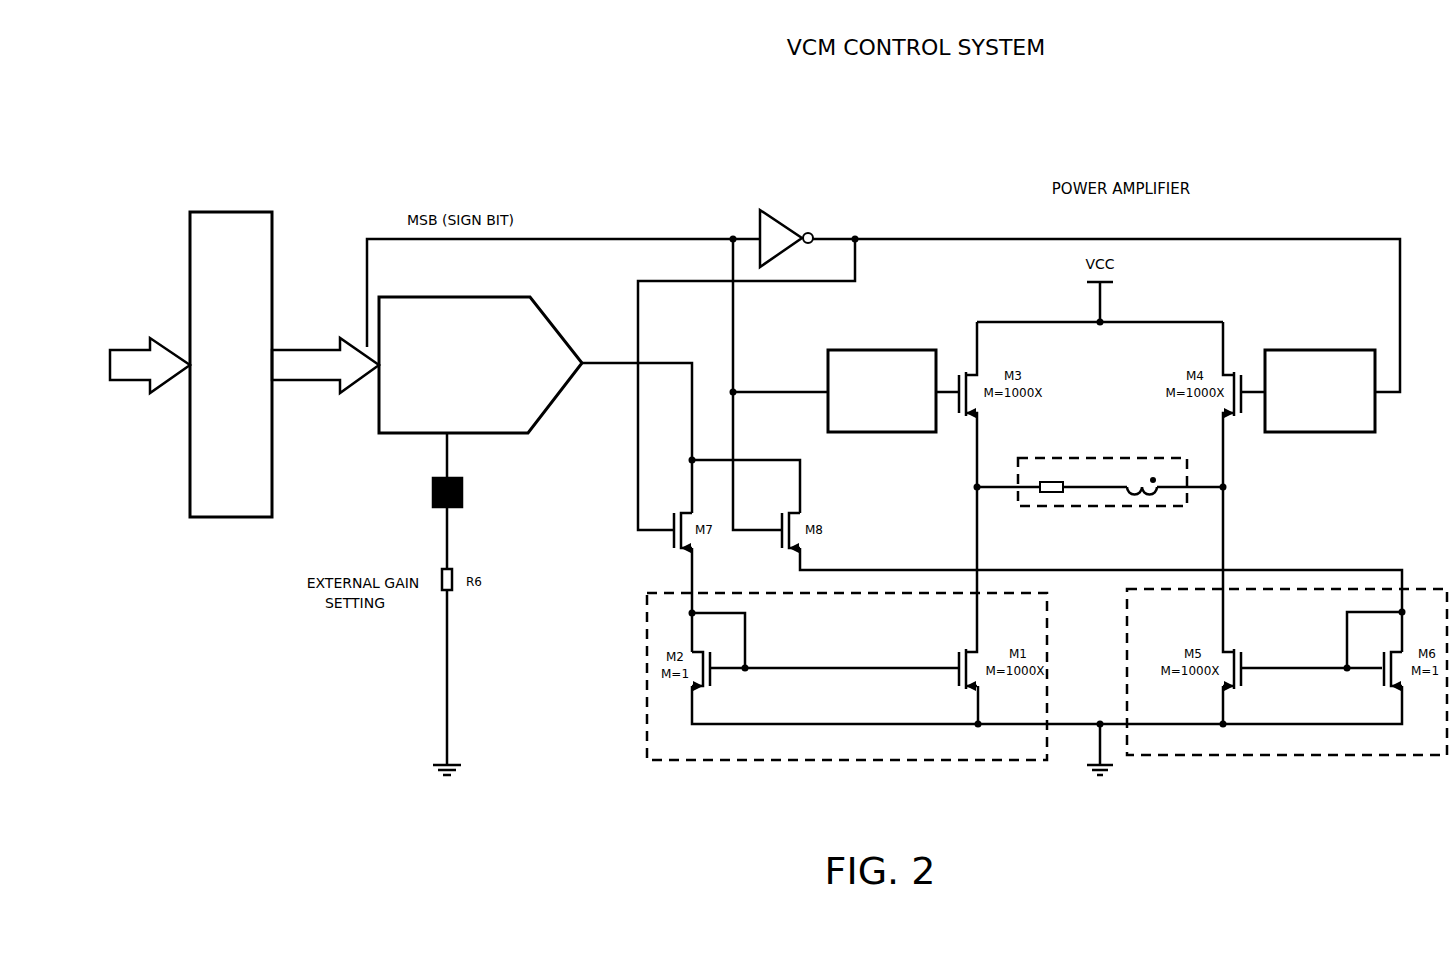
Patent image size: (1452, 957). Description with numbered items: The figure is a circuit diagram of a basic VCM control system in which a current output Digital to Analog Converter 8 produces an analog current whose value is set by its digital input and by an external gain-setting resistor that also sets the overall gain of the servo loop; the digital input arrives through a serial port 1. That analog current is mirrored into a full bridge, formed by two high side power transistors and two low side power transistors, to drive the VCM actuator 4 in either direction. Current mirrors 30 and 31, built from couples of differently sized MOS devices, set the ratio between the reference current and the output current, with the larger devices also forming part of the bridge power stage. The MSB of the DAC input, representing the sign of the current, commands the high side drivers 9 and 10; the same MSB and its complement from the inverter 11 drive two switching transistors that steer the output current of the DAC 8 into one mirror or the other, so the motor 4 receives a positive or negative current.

The serial port 1 is at (272, 283).
The Digital to Analog Converter 8 is at (512, 433).
The inverter 11 is at (789, 217).
The high side driver 9 is at (912, 350).
The high side driver 10 is at (1350, 350).
The VCM actuator 4 is at (1168, 458).
The current mirror 30 is at (647, 720).
The current mirror 31 is at (1370, 589).